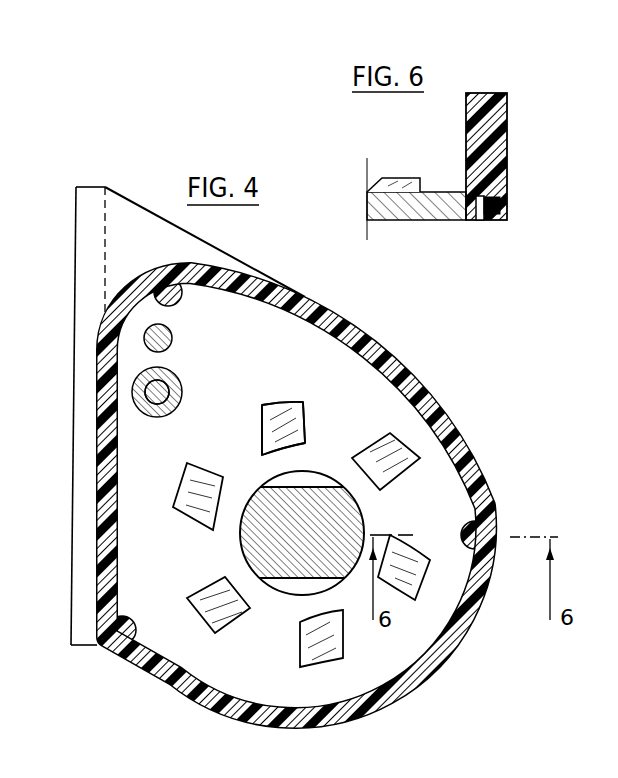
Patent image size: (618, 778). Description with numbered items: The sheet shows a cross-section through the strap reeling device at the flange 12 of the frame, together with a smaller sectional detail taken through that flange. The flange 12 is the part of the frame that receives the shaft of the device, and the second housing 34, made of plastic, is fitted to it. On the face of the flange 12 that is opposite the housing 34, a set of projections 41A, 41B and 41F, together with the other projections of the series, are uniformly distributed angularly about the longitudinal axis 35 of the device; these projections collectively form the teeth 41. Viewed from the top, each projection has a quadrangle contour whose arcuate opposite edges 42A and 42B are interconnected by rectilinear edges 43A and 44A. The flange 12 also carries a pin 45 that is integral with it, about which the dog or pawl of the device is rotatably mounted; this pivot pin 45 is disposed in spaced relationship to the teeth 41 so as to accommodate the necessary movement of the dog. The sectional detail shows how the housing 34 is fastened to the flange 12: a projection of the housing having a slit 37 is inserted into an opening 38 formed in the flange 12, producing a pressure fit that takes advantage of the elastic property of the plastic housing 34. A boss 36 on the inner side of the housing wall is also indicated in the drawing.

In FIG. 6, the flange 12 is at (413, 206).
In FIG. 4, the second housing 34 is at (452, 386).
In FIG. 4, the longitudinal axis 35 is at (273, 533).
In FIG. 4, the mounting boss 36 is at (500, 531).
In FIG. 6, the slit 37 is at (507, 200).
In FIG. 6, the opening 38 is at (478, 212).
In FIG. 6, the teeth 41 is at (400, 178).
In FIG. 4, the projection 41A is at (287, 399).
In FIG. 4, the projection 41B is at (395, 460).
In FIG. 4, the projection 41F is at (186, 500).
In FIG. 4, the arcuate edge 42A is at (265, 400).
In FIG. 4, the arcuate edge 42B is at (290, 447).
In FIG. 4, the rectilinear edge 43A is at (259, 430).
In FIG. 4, the rectilinear edge 44A is at (305, 422).
In FIG. 4, the pin 45 is at (168, 385).